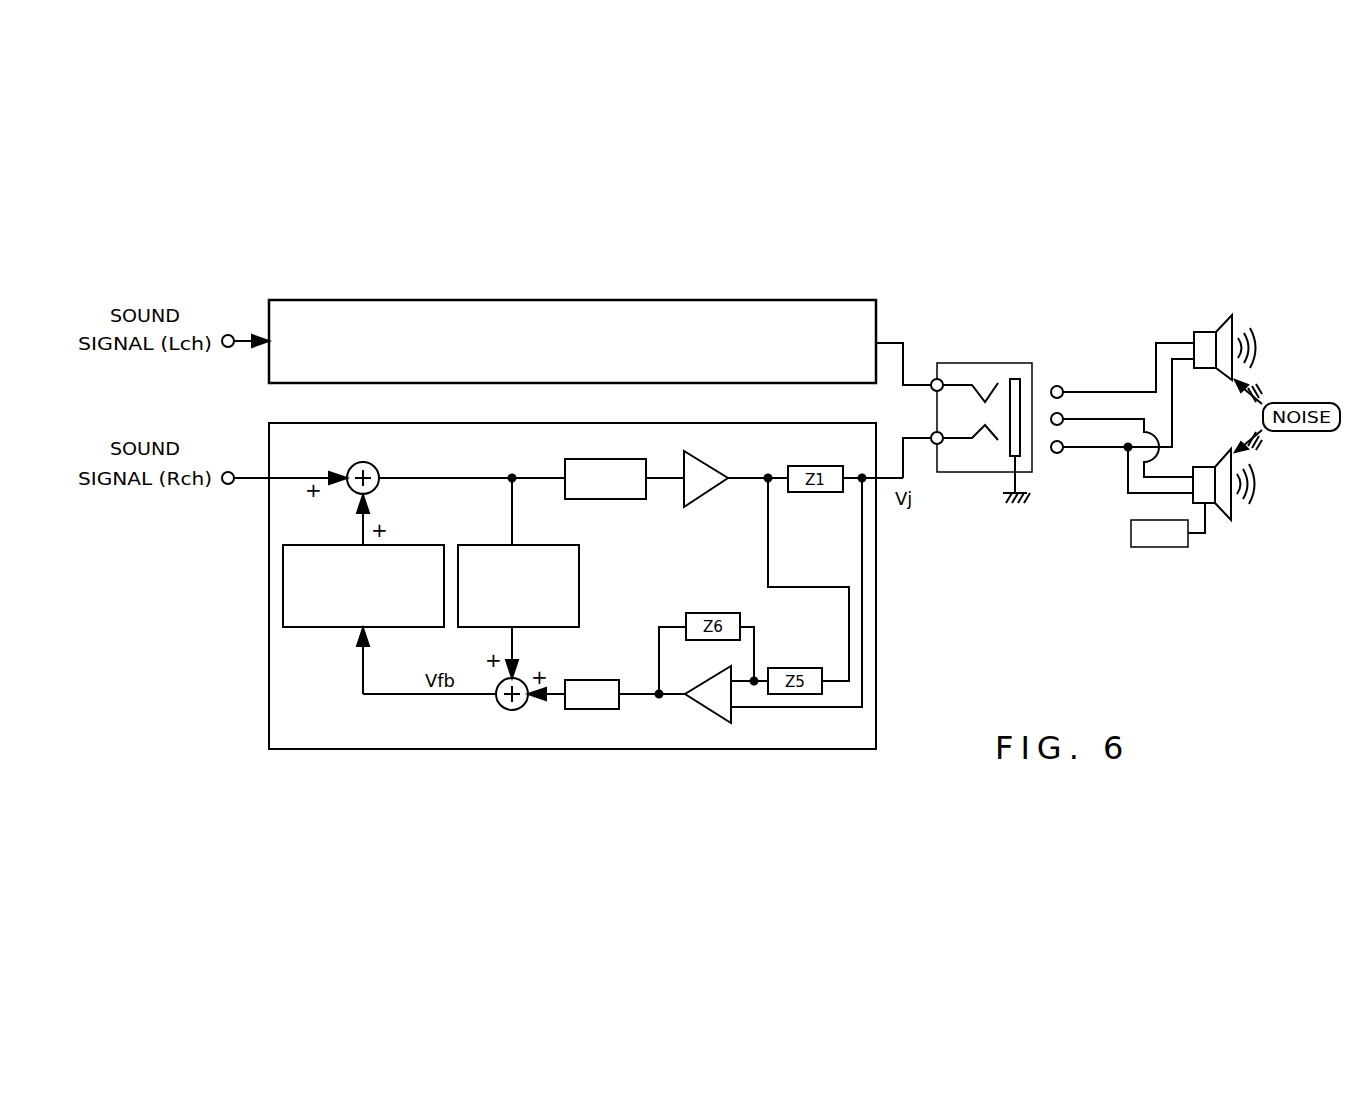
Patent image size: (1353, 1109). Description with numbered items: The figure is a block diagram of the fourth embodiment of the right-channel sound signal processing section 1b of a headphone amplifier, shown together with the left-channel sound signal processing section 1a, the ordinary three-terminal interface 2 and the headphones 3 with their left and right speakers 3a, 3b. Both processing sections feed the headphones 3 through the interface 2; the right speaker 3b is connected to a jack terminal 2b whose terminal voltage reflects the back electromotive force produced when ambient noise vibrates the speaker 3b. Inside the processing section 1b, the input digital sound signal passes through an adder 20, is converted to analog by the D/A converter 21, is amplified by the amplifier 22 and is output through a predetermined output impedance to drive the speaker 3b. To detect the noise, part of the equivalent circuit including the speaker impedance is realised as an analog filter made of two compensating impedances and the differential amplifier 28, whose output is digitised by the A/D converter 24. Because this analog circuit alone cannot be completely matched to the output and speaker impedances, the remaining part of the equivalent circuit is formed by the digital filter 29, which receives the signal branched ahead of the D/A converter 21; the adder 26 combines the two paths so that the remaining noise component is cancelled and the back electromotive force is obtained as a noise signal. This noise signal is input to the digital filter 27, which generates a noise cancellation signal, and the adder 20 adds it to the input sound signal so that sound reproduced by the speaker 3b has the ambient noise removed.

The sound signal processing section 1a is at (466, 300).
The sound signal processing section 1b is at (420, 423).
The three-terminal interface 2 is at (985, 363).
The jack terminal 2b is at (933, 432).
The headphones 3 is at (1175, 387).
The left speaker 3a is at (1217, 327).
The right speaker 3b is at (1216, 462).
The adder 20 is at (356, 463).
The D/A converter 21 is at (585, 459).
The amplifier 22 is at (707, 493).
The A/D converter 24 is at (578, 680).
The adder 26 is at (503, 707).
The digital filter 27 is at (402, 545).
The differential amplifier 28 is at (706, 709).
The digital filter 29 is at (540, 545).